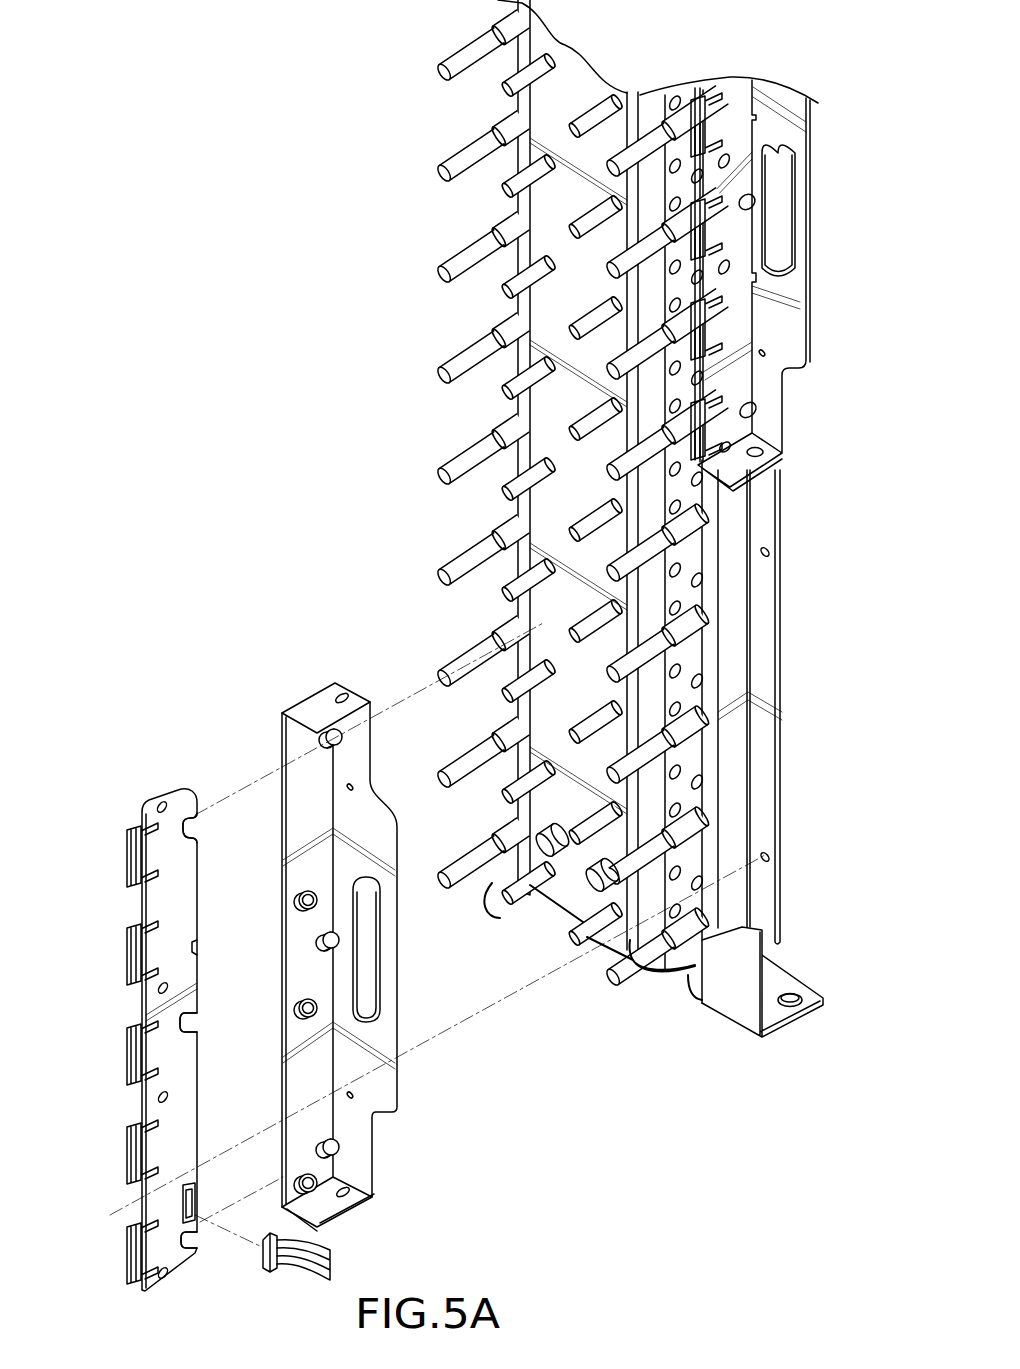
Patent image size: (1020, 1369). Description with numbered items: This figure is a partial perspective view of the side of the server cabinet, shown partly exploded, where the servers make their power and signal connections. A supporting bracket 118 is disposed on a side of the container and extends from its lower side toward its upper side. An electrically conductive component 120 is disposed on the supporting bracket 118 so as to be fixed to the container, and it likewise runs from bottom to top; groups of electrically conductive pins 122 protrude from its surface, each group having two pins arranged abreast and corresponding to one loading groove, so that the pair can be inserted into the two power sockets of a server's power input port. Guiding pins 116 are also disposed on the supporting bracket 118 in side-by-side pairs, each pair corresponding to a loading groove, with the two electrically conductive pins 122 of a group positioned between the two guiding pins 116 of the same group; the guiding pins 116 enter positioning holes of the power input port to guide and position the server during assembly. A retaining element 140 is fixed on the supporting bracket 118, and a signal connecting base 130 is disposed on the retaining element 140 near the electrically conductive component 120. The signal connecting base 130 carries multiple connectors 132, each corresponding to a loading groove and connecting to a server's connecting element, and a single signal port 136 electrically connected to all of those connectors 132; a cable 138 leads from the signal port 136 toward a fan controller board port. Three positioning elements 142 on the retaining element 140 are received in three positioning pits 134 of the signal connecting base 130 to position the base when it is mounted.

The guiding pin 116 is at (465, 860).
The supporting bracket 118 is at (737, 1010).
The electrically conductive component 120 is at (516, 606).
The electrically conductive pin 122 is at (577, 921).
The signal connecting base 130 is at (760, 336).
The connector 132 is at (130, 1267).
The positioning pit 134 is at (186, 816).
The signal port 136 is at (195, 1193).
The cable 138 is at (290, 1273).
The retaining element 140 is at (816, 176).
The positioning element 142 is at (343, 740).